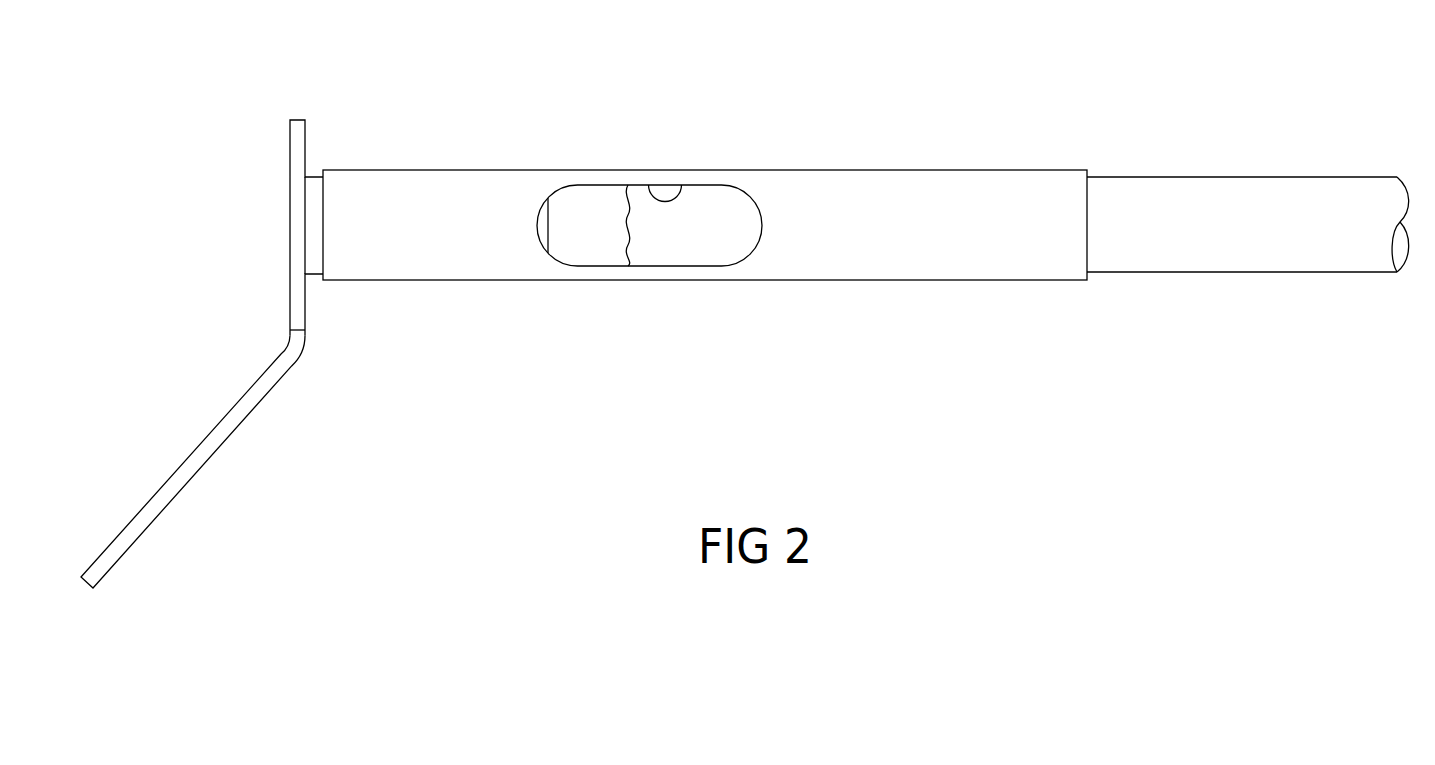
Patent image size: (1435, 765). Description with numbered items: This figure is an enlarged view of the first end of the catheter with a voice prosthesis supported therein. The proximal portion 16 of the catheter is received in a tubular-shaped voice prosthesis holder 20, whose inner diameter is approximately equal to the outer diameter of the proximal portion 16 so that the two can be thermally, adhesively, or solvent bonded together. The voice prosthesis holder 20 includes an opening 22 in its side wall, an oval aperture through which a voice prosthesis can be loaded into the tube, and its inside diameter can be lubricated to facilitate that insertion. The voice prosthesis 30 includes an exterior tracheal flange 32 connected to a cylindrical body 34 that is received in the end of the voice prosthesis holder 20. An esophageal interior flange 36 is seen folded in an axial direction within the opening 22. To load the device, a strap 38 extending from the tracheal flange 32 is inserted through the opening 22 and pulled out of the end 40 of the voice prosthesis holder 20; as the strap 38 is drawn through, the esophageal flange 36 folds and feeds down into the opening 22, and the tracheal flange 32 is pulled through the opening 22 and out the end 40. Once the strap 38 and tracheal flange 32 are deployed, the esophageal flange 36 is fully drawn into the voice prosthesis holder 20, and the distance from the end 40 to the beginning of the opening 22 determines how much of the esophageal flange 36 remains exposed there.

The proximal portion 16 is at (1313, 163).
The voice prosthesis holder 20 is at (475, 312).
The opening 22 is at (682, 197).
The voice prosthesis 30 is at (246, 325).
The exterior tracheal flange 32 is at (293, 142).
The cylindrical body 34 is at (311, 259).
The esophageal interior flange 36 is at (588, 207).
The strap 38 is at (230, 425).
The end 40 is at (323, 242).